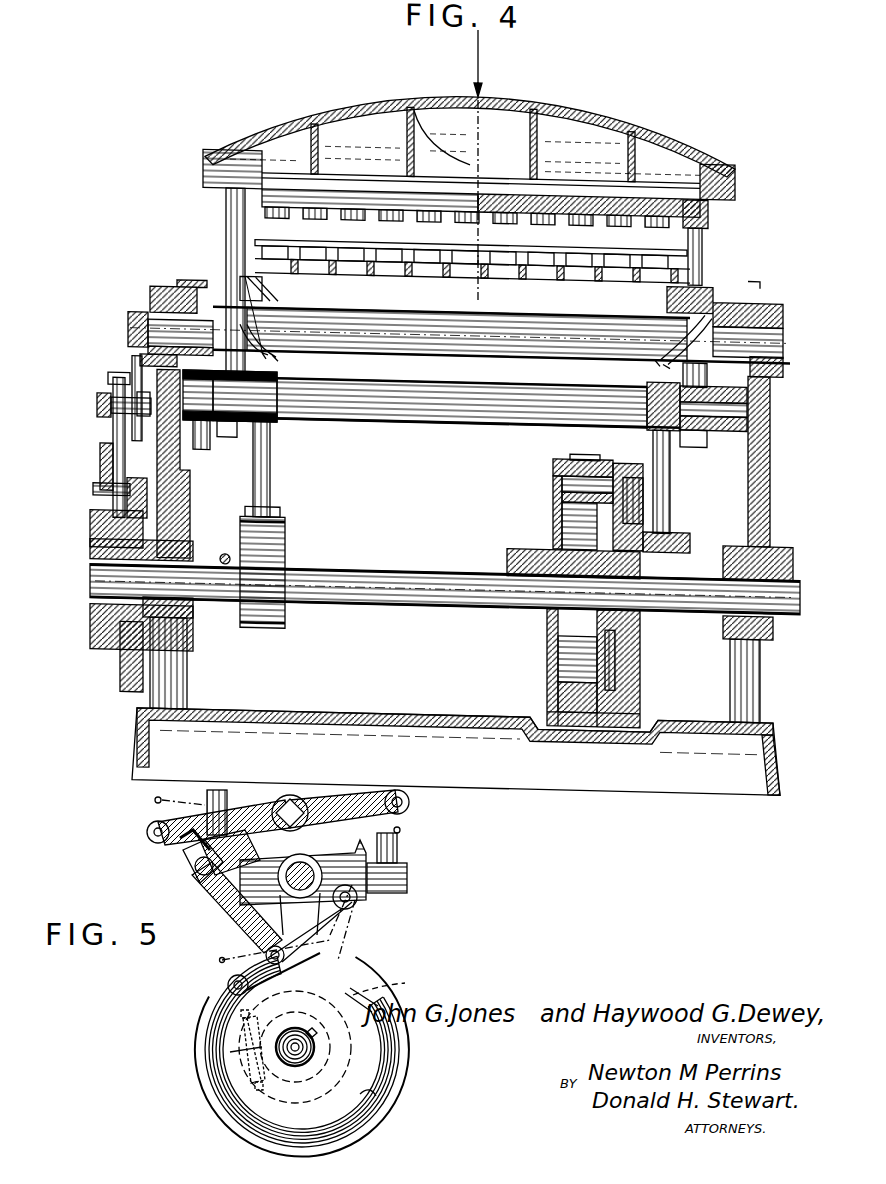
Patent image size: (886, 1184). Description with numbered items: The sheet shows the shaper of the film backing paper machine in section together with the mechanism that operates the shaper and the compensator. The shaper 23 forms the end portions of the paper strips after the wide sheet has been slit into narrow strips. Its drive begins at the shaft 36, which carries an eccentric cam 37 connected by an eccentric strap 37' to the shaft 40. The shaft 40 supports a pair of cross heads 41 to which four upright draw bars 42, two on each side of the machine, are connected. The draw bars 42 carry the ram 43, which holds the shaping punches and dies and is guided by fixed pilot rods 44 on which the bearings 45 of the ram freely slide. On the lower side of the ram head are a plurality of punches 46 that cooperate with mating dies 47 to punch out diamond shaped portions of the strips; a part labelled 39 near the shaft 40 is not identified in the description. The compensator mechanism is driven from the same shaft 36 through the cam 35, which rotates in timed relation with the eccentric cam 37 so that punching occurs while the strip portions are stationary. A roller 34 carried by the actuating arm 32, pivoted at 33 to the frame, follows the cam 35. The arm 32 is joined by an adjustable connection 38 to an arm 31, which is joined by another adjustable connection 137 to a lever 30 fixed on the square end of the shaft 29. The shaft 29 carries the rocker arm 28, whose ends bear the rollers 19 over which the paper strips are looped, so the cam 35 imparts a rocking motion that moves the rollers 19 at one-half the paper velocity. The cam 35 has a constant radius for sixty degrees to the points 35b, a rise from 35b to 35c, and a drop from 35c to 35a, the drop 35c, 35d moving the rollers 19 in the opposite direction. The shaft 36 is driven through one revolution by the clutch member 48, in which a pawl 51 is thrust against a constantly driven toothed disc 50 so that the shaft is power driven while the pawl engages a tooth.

In FIG. 5, the rollers 19 is at (147, 834).
In FIG. 4, the shaper 23 is at (479, 194).
In FIG. 5, the rocker arm 28 is at (372, 800).
In FIG. 4, the shaft 29 is at (130, 339).
In FIG. 5, the shaft 29 is at (298, 798).
In FIG. 4, the lever 30 is at (135, 377).
In FIG. 5, the lever 30 is at (253, 807).
In FIG. 4, the arm 31 is at (113, 447).
In FIG. 5, the arm 31 is at (245, 923).
In FIG. 4, the actuating arm 32 is at (102, 476).
In FIG. 5, the actuating arm 32 is at (331, 914).
In FIG. 5, the pivot 33 is at (357, 898).
In FIG. 5, the roller 34 is at (227, 989).
In FIG. 4, the cam 35 is at (122, 499).
In FIG. 5, the cam 35 is at (218, 1028).
In FIG. 5, the cam point 35a is at (270, 1022).
In FIG. 5, the cam point 35b is at (230, 1052).
In FIG. 5, the cam point 35c is at (358, 1097).
In FIG. 5, the cam point 35d is at (345, 1012).
In FIG. 4, the shaft 36 is at (444, 578).
In FIG. 5, the shaft 36 is at (306, 1058).
In FIG. 4, the eccentric cam 37 is at (481, 566).
In FIG. 5, the eccentric cam 37 is at (393, 982).
In FIG. 4, the eccentric strap 37' is at (461, 475).
In FIG. 5, the eccentric strap 37' is at (402, 936).
In FIG. 5, the adjustable connection 38 is at (335, 945).
In FIG. 4, the bracket 39 is at (278, 384).
In FIG. 4, the shaft 40 is at (471, 397).
In FIG. 5, the shaft 40 is at (281, 893).
In FIG. 4, the cross heads 41 is at (240, 443).
In FIG. 5, the cross heads 41 is at (358, 852).
In FIG. 4, the draw bars 42 is at (226, 229).
In FIG. 5, the draw bars 42 is at (155, 800).
In FIG. 4, the ram 43 is at (486, 106).
In FIG. 4, the pilot rods 44 is at (703, 245).
In FIG. 4, the bearings 45 is at (709, 217).
In FIG. 4, the punches 46 is at (357, 224).
In FIG. 4, the dies 47 is at (334, 252).
In FIG. 4, the clutch member 48 is at (553, 472).
In FIG. 4, the toothed disc 50 is at (560, 507).
In FIG. 4, the pawl 51 is at (585, 457).
In FIG. 4, the adjustable connection 137 is at (97, 408).
In FIG. 5, the adjustable connection 137 is at (195, 878).